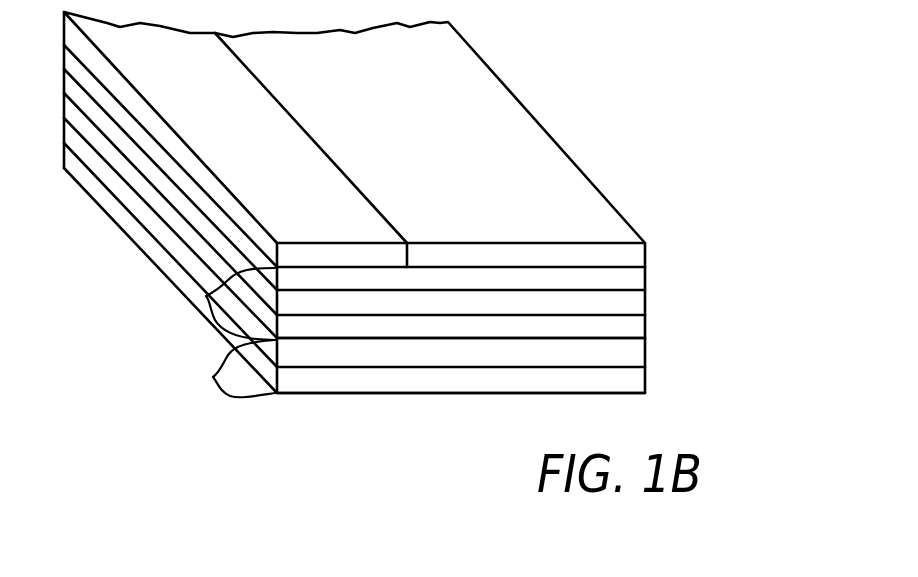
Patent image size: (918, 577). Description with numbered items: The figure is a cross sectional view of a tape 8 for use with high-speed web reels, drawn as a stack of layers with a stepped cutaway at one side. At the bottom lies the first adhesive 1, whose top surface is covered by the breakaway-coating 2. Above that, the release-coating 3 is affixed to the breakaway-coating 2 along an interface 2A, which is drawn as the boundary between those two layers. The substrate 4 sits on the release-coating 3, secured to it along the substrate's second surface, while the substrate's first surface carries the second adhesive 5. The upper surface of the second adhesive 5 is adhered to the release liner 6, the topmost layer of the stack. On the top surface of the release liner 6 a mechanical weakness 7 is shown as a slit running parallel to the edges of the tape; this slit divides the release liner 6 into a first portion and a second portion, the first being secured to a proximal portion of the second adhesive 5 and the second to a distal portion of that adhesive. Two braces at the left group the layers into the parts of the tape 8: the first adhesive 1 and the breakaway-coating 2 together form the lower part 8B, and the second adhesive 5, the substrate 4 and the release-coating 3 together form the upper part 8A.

The first adhesive 1 is at (624, 380).
The breakaway-coating 2 is at (625, 353).
The interface 2A is at (650, 339).
The release-coating 3 is at (627, 328).
The substrate 4 is at (625, 302).
The second adhesive 5 is at (627, 280).
The release liner 6 is at (625, 252).
The mechanical weakness 7 is at (350, 180).
The tape 8 is at (465, 403).
The upper part 8A is at (204, 295).
The lower part 8B is at (212, 377).